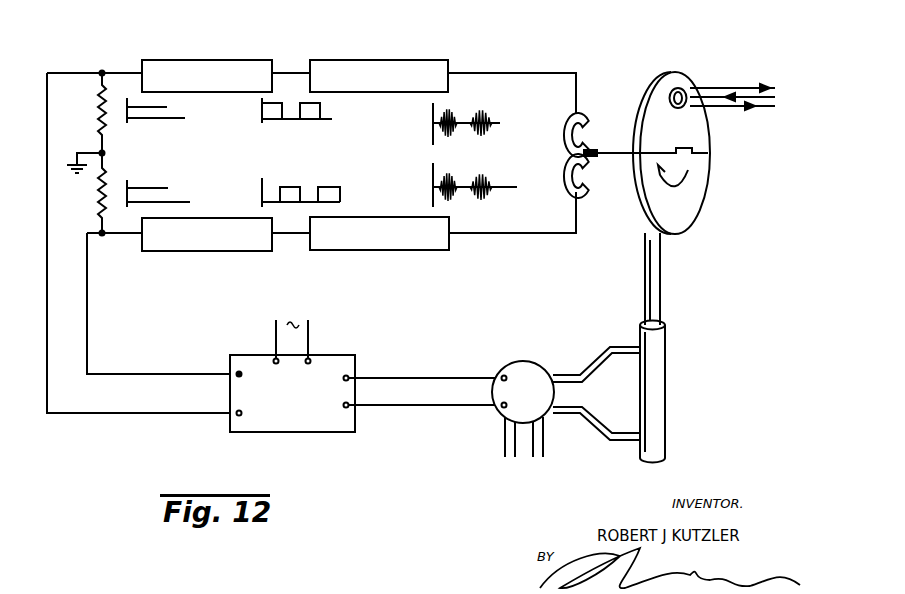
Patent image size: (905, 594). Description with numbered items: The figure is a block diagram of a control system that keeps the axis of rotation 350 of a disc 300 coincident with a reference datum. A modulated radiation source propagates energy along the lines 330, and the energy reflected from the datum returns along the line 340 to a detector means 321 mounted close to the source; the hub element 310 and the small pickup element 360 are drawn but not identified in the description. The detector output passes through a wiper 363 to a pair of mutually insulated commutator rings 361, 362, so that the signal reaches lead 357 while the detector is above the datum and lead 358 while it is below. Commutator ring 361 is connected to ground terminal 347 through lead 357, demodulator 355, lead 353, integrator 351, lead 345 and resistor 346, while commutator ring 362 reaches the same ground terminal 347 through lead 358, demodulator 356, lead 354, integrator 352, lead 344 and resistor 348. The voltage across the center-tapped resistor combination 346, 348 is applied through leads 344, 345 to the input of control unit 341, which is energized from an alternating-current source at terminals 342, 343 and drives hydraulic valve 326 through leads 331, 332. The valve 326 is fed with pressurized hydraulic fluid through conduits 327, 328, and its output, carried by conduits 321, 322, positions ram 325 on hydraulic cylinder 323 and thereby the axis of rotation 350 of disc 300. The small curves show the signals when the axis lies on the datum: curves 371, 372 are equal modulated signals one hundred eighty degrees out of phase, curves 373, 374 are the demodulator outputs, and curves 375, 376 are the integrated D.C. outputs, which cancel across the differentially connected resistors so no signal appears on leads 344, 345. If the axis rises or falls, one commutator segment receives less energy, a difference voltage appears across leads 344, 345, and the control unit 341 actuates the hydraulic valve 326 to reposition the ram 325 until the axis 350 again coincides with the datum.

The disc 300 is at (690, 196).
The hub 310 is at (676, 88).
The detector means 321 is at (690, 90).
The conduit 322 is at (598, 437).
The hydraulic cylinder 323 is at (661, 362).
The ram 325 is at (655, 296).
The hydraulic valve 326 is at (511, 362).
The conduit 327 is at (503, 456).
The conduit 328 is at (541, 456).
The lines of propagated energy 330 is at (746, 88).
The lead 331 is at (419, 378).
The lead 332 is at (420, 406).
The line of reflected energy 340 is at (716, 100).
The control unit 341 is at (353, 355).
The terminal 342 is at (311, 345).
The terminal 343 is at (273, 345).
The lead 344 is at (118, 374).
The lead 345 is at (134, 413).
The resistor 346 is at (101, 108).
The ground terminal 347 is at (101, 151).
The resistor 348 is at (100, 190).
The axis of rotation 350 is at (708, 153).
The integrator 351 is at (180, 60).
The integrator 352 is at (197, 218).
The lead 353 is at (286, 73).
The lead 354 is at (287, 234).
The demodulator 355 is at (338, 60).
The demodulator 356 is at (400, 217).
The lead 357 is at (472, 73).
The lead 358 is at (463, 234).
The pickup core 360 is at (617, 136).
The commutator ring 361 is at (565, 138).
The commutator ring 362 is at (566, 174).
The wiper 363 is at (588, 113).
The curve 371 is at (478, 122).
The curve 372 is at (462, 185).
The curve 373 is at (294, 120).
The curve 374 is at (304, 195).
The curve 375 is at (165, 119).
The curve 376 is at (160, 188).